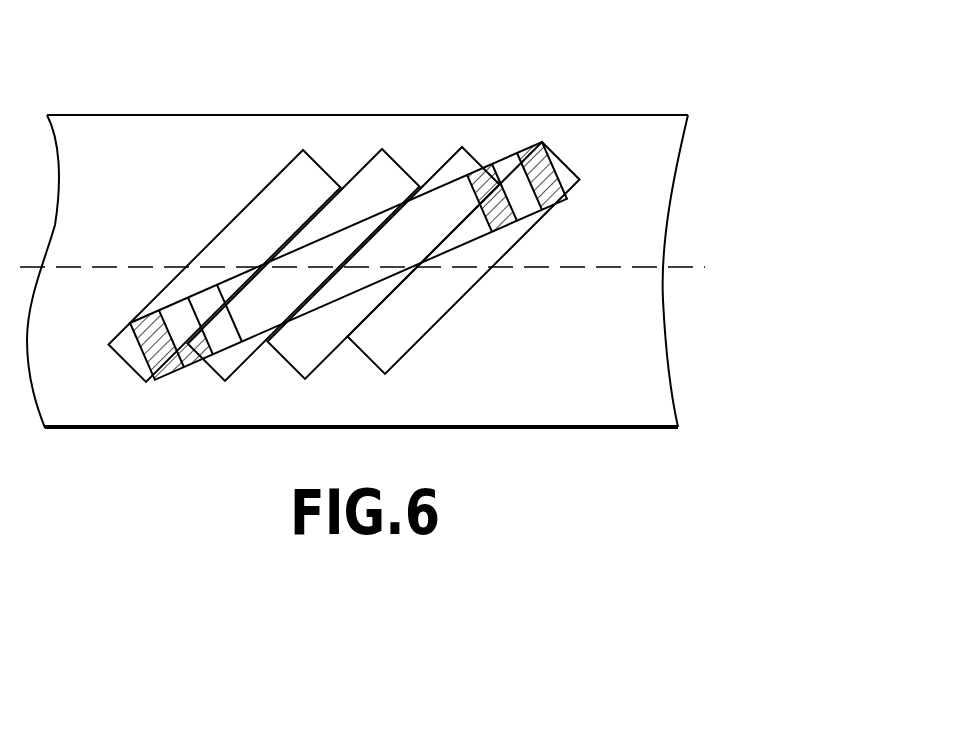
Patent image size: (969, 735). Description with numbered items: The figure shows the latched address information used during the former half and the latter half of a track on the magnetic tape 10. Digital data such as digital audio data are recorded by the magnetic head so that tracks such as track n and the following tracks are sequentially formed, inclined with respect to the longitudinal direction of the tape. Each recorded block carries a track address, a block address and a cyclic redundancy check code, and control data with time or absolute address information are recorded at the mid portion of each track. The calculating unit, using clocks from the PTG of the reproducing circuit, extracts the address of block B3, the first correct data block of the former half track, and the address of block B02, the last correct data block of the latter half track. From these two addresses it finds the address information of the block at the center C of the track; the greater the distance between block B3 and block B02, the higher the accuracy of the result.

The magnetic tape 10 is at (600, 116).
The track n is at (324, 172).
The center of the track C is at (372, 277).
The block B3 of the former half track B3 is at (225, 340).
The block B02 of the latter half track B02 is at (527, 207).